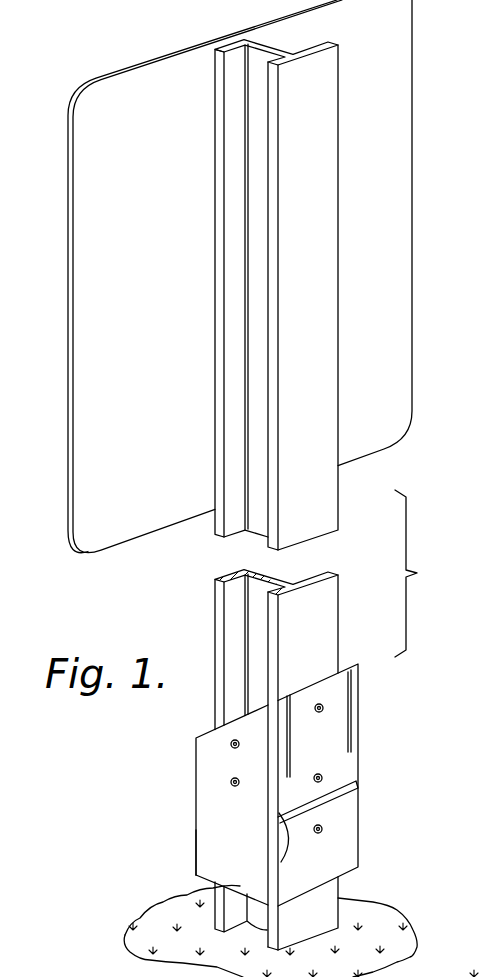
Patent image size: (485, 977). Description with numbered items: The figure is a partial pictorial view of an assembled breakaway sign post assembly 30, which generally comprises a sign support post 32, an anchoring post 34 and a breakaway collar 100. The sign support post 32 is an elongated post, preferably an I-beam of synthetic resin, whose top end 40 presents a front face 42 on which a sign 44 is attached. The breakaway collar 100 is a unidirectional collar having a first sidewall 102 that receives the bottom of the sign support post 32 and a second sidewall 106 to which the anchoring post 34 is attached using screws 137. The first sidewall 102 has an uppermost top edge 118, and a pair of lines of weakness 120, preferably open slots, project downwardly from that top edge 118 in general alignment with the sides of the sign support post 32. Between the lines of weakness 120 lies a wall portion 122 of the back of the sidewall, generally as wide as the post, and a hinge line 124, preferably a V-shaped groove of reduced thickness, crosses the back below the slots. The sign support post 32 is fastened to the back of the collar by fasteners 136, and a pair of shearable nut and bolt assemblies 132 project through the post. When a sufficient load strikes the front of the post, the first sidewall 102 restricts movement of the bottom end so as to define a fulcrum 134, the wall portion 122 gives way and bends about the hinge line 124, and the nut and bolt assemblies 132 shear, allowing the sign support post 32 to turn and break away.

The breakaway sign post assembly 30 is at (429, 323).
The sign support post 32 is at (322, 177).
The anchoring post 34 is at (325, 900).
The top end 40 is at (265, 43).
The front face 42 is at (215, 143).
The sign 44 is at (97, 121).
The breakaway collar 100 is at (346, 862).
The first sidewall 102 is at (207, 742).
The second sidewall 106 is at (203, 852).
The uppermost top edge 118 is at (328, 673).
The lines of weakness 120 is at (350, 707).
The wall portion 122 is at (315, 731).
The hinge line 124 is at (350, 787).
The shearable nut and bolt assemblies 132 is at (231, 781).
The fulcrum 134 is at (282, 858).
The fasteners 136 is at (325, 778).
The screws 137 is at (323, 830).